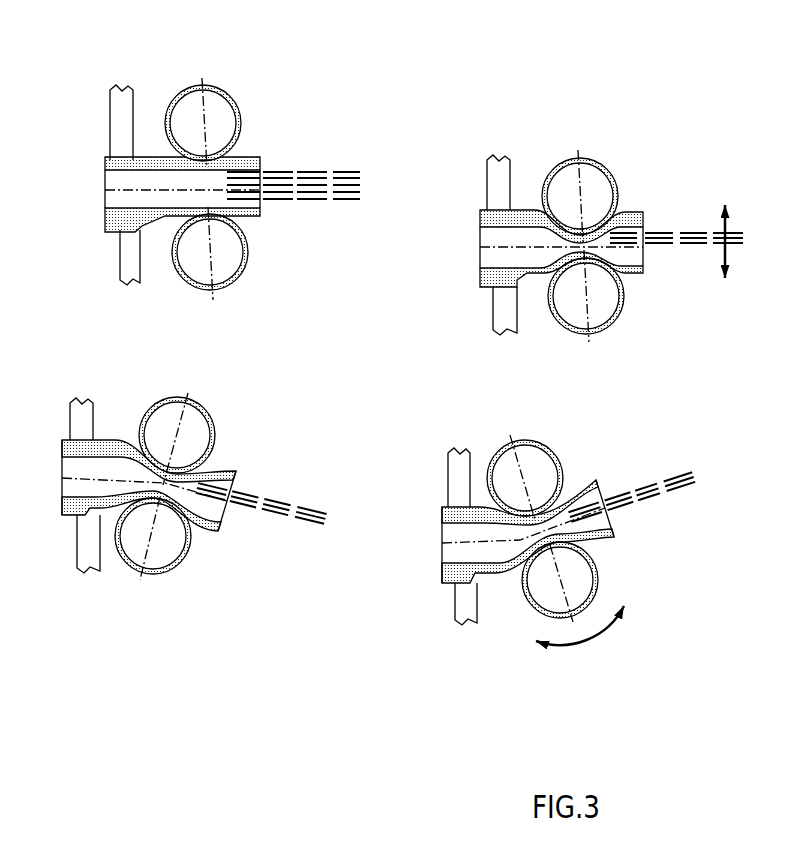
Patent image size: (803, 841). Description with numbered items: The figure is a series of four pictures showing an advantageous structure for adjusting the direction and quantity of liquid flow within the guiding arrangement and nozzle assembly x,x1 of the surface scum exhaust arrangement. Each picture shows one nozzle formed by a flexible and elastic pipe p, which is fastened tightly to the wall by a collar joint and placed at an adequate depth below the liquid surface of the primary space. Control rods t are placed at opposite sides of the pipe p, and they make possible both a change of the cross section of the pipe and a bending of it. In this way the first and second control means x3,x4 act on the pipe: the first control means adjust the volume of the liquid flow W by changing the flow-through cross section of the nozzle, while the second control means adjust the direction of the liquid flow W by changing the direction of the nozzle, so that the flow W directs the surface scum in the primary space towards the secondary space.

The flexible and elastic pipe p is at (152, 155).
The control rod t is at (233, 95).
The first and second control means x3,x4 is at (245, 127).
The liquid flow W is at (308, 167).
The guiding arrangement and nozzle assembly x,x1 is at (165, 222).